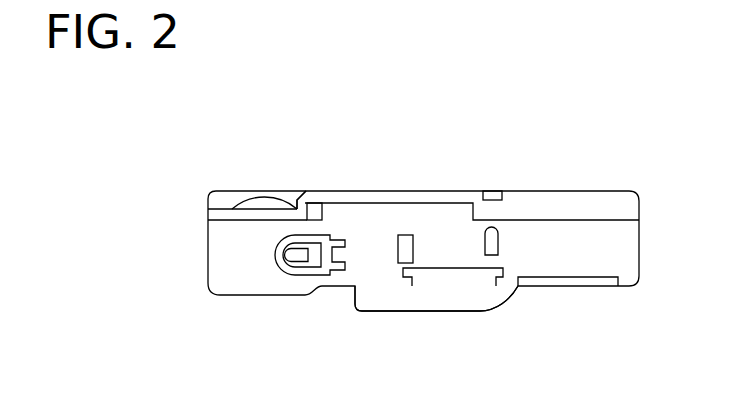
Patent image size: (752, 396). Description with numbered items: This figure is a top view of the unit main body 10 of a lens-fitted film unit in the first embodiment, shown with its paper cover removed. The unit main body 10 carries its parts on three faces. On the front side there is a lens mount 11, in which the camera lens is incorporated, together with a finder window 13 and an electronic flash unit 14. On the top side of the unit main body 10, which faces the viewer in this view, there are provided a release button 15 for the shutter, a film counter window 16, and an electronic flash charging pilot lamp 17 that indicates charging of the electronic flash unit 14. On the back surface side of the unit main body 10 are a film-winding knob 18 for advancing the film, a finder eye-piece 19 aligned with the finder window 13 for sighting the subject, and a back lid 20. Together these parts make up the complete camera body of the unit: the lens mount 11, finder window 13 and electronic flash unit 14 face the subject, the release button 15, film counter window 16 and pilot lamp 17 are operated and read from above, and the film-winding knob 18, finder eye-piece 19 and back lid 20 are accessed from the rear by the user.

The unit main body 10 is at (251, 305).
The lens mount 11 is at (498, 303).
The finder window 13 is at (433, 287).
The electronic flash unit 14 is at (583, 286).
The release button 15 is at (297, 256).
The film counter window 16 is at (407, 235).
The electronic flash charging pilot lamp 17 is at (490, 223).
The film-winding knob 18 is at (250, 192).
The finder eye-piece 19 is at (458, 190).
The back lid 20 is at (300, 192).